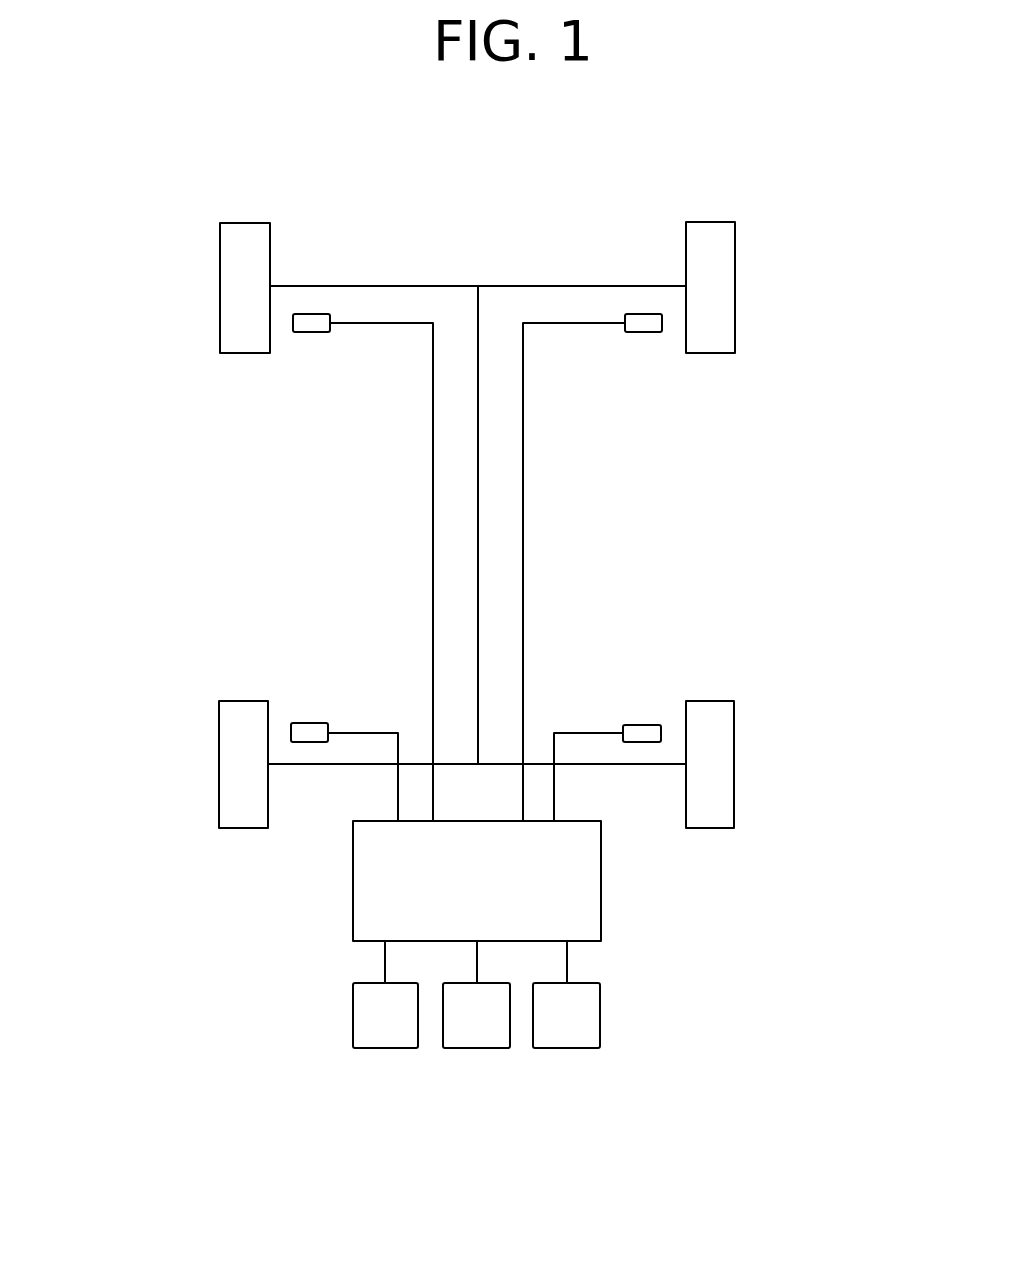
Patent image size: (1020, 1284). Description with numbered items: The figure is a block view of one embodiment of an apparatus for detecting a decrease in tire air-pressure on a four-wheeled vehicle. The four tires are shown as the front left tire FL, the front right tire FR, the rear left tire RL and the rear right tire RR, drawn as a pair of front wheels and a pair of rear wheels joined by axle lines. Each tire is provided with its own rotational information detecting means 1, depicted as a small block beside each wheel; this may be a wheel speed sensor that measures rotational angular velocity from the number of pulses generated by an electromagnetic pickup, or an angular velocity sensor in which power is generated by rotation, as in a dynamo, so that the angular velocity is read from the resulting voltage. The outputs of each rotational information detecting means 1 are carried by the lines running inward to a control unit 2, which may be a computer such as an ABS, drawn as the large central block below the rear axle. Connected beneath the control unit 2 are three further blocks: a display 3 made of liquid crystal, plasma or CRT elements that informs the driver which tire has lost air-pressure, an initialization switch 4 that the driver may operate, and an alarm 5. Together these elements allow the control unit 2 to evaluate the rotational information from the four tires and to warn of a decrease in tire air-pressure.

The front left tire FL is at (232, 259).
The front right tire FR is at (719, 264).
The rear left tire RL is at (232, 750).
The rear right tire RR is at (718, 752).
The rotational information detecting means 1 is at (303, 326).
The control unit 2 is at (592, 909).
The display 3 is at (388, 1034).
The initialization switch 4 is at (480, 1033).
The alarm 5 is at (568, 1033).